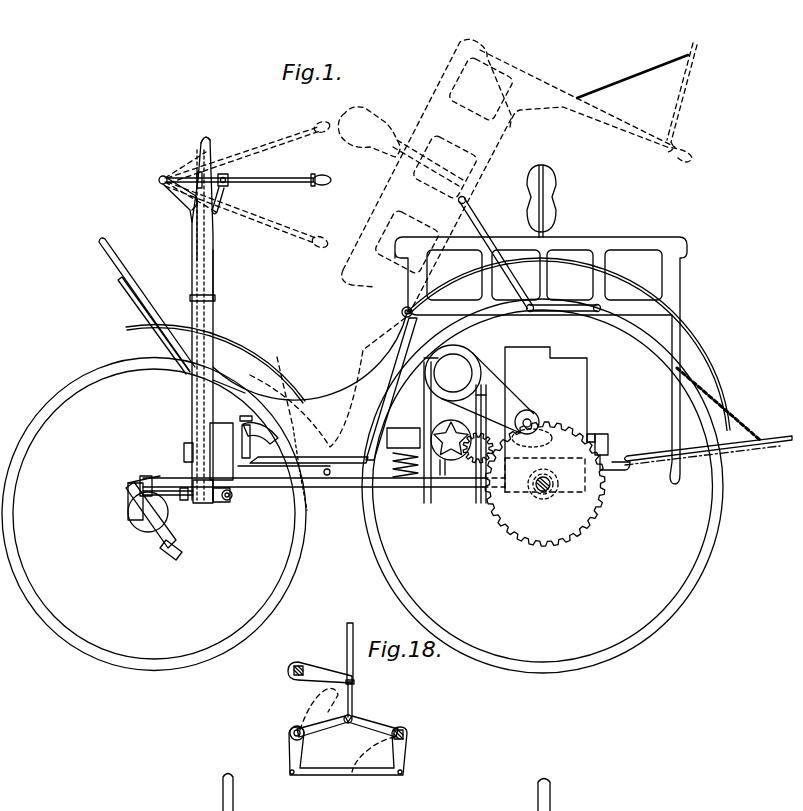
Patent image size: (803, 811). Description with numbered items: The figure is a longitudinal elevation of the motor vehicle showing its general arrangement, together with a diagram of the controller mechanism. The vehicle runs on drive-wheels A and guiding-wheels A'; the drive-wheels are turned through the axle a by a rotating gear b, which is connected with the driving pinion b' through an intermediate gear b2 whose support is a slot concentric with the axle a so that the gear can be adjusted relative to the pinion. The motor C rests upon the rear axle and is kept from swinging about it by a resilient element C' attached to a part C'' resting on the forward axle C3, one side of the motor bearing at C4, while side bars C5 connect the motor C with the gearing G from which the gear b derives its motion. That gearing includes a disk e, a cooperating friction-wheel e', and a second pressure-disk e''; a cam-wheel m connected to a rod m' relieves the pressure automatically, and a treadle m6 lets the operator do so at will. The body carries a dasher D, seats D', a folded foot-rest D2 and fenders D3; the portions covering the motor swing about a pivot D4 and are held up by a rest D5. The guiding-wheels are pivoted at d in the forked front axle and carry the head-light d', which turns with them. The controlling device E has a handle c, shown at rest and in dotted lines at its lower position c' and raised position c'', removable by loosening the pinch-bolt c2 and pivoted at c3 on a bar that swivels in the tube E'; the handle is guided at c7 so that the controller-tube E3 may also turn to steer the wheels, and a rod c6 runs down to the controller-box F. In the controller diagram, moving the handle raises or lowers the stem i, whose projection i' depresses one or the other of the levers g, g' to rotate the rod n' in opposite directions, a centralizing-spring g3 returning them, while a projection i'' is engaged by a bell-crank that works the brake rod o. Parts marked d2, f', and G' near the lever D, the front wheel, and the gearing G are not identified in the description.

In FIG. 1, the drive-wheel A is at (542, 486).
In FIG. 1, the guiding-wheel A' is at (154, 514).
In FIG. 1, the axle a is at (545, 476).
In FIG. 1, the rotating element (gear) b is at (545, 484).
In FIG. 1, the driving pinion b' is at (443, 469).
In FIG. 1, the intermediate gear b2 is at (497, 400).
In FIG. 1, the motor C is at (546, 419).
In FIG. 1, the resilient element C' is at (324, 400).
In FIG. 1, the forward support part C'' is at (334, 489).
In FIG. 1, the forward axle C3 is at (169, 501).
In FIG. 1, the motor bearing point C4 is at (212, 502).
In FIG. 1, the side bar C5 is at (169, 507).
In FIG. 1, the handle c is at (249, 173).
In FIG. 1, the handle lower position c' is at (247, 216).
In FIG. 1, the handle raised position c'' is at (248, 149).
In FIG. 1, the pinch-bolt c2 is at (225, 172).
In FIG. 1, the handle pivot c3 is at (166, 196).
In FIG. 1, the rod c6 is at (214, 214).
In FIG. 1, the handle guide c7 is at (214, 131).
In FIG. 1, the dasher D is at (147, 303).
In FIG. 1, the seat D' is at (515, 261).
In FIG. 1, the folded foot-rest D2 is at (684, 258).
In FIG. 1, the fender D3 is at (583, 349).
In FIG. 1, the pivot D4 is at (400, 313).
In FIG. 1, the rest D5 is at (500, 212).
In FIG. 1, the wheel pivot d is at (154, 521).
In FIG. 1, the head-light d' is at (136, 504).
In FIG. 1, the lever rod d2 is at (118, 288).
In FIG. 1, the controlling device E is at (191, 318).
In FIG. 1, the tube E' is at (215, 269).
In FIG. 1, the controller-tube E3 is at (227, 275).
In FIG. 1, the disk e is at (478, 475).
In FIG. 1, the friction-wheel e' is at (451, 437).
In FIG. 1, the second disk e'' is at (412, 473).
In FIG. 1, the controller-box F is at (208, 451).
In FIG. 1, the fender f' is at (215, 364).
In FIG. 1, the gearing G is at (455, 448).
In FIG. 1, the stop G' is at (609, 451).
In FIG. 1, the cam-wheel m is at (327, 414).
In FIG. 1, the rod m' is at (303, 447).
In FIG. 1, the treadle m6 is at (261, 432).
In FIG. 18, the stem i is at (357, 670).
In FIG. 18, the projection i' is at (386, 793).
In FIG. 18, the projection i'' is at (363, 681).
In FIG. 18, the brake-actuator o is at (291, 674).
In FIG. 18, the lever g is at (347, 716).
In FIG. 18, the lever g' is at (319, 709).
In FIG. 18, the centralizing-spring g3 is at (348, 750).
In FIG. 18, the shaft n' is at (422, 739).